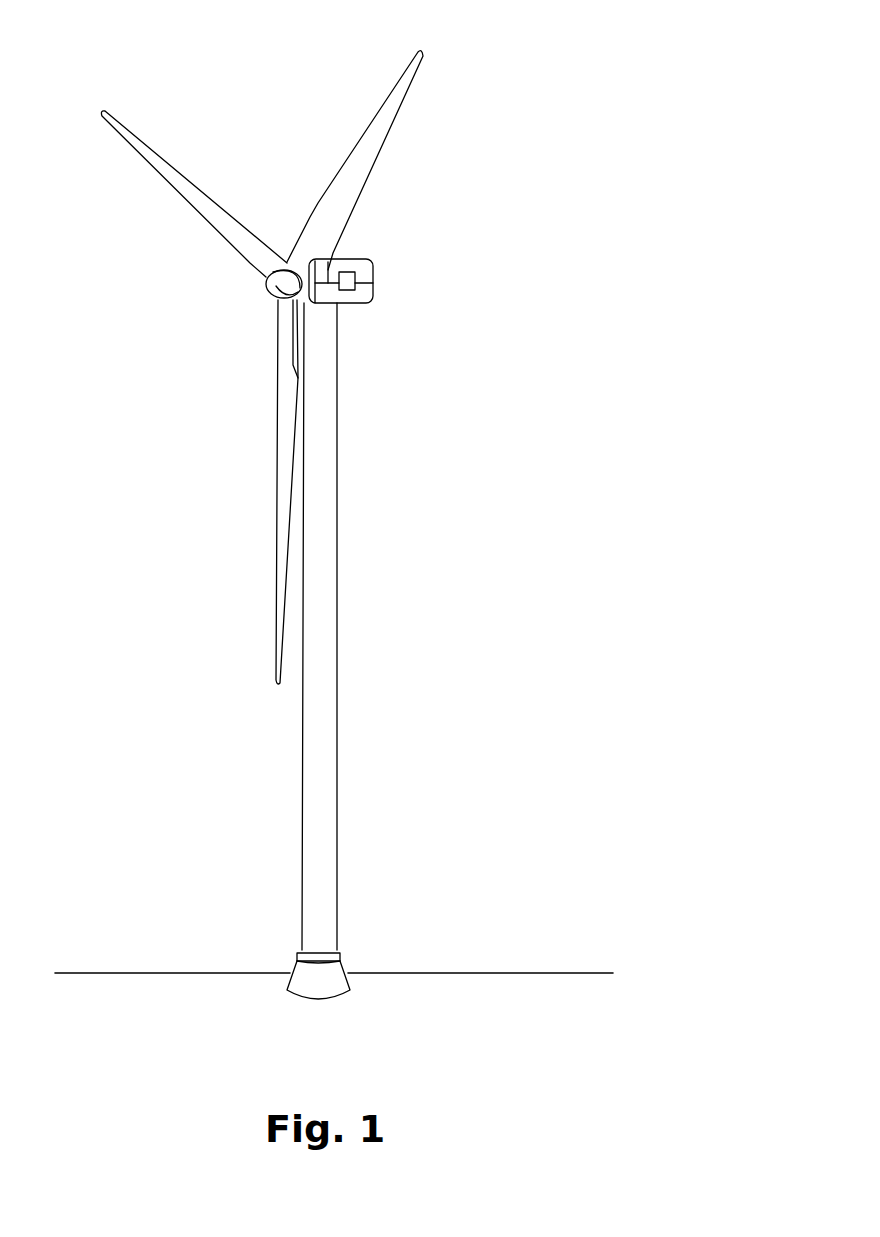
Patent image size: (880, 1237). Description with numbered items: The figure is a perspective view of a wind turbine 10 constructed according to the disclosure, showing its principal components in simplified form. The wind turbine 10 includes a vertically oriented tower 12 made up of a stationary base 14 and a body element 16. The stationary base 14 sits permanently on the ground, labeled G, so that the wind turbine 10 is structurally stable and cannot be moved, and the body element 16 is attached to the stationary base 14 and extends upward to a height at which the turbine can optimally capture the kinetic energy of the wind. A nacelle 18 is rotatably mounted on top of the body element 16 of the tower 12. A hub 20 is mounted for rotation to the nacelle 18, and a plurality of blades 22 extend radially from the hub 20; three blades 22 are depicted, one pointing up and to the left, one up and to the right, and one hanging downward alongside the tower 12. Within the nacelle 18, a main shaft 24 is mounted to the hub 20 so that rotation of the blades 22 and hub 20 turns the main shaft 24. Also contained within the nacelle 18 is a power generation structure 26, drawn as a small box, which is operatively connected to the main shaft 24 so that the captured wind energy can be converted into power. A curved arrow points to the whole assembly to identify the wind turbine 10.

The wind turbine 10 is at (631, 54).
The tower 12 is at (337, 735).
The stationary base 14 is at (338, 988).
The body element 16 is at (339, 883).
The nacelle 18 is at (356, 263).
The hub 20 is at (264, 288).
The blades 22 is at (405, 93).
The main shaft 24 is at (331, 262).
The power generation structure 26 is at (358, 283).